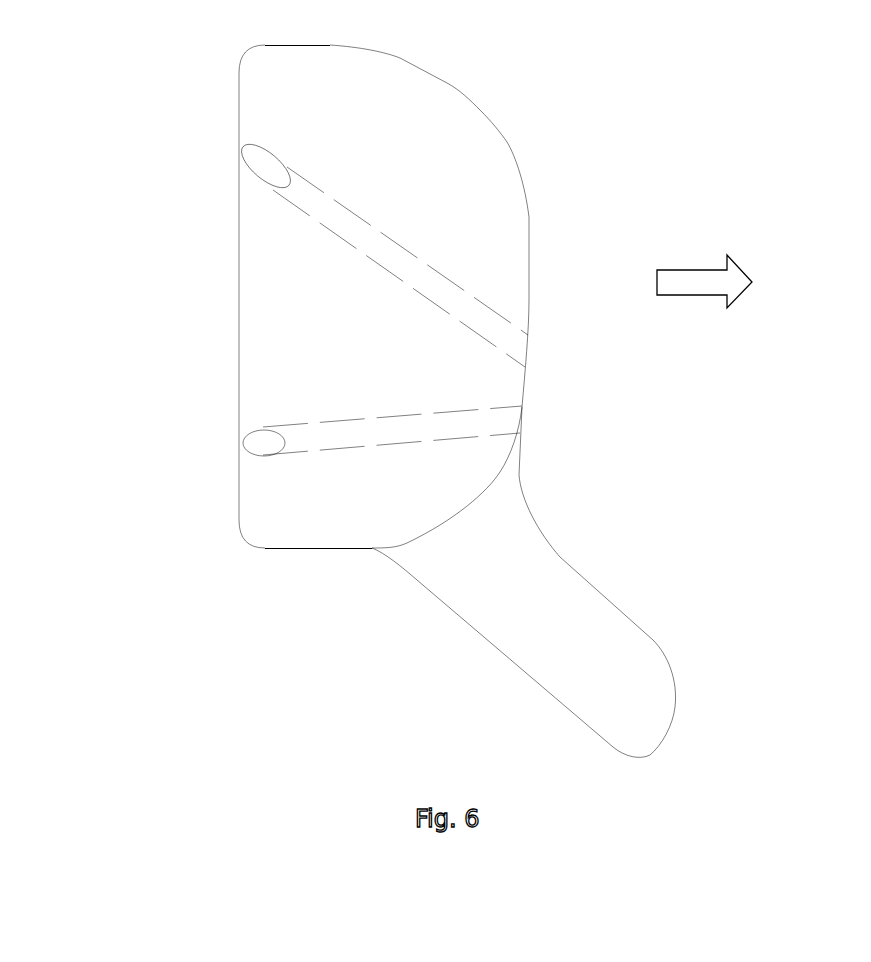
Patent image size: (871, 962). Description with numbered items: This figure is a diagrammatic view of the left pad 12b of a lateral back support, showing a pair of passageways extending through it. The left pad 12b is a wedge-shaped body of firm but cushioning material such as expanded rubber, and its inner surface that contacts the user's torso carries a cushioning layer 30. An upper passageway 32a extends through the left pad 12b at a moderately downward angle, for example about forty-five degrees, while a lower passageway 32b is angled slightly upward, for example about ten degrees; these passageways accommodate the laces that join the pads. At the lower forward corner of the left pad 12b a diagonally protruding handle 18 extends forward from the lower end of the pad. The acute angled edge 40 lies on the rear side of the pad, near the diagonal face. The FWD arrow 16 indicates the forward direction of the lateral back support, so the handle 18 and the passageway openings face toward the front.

The left pad 12b is at (433, 406).
The cushioning layer 30 is at (502, 232).
The acute angled edge 40 is at (238, 338).
The handle 18 is at (658, 698).
The upper passageway 32a is at (267, 165).
The lower passageway 32b is at (255, 440).
The FWD arrow 16 is at (745, 272).